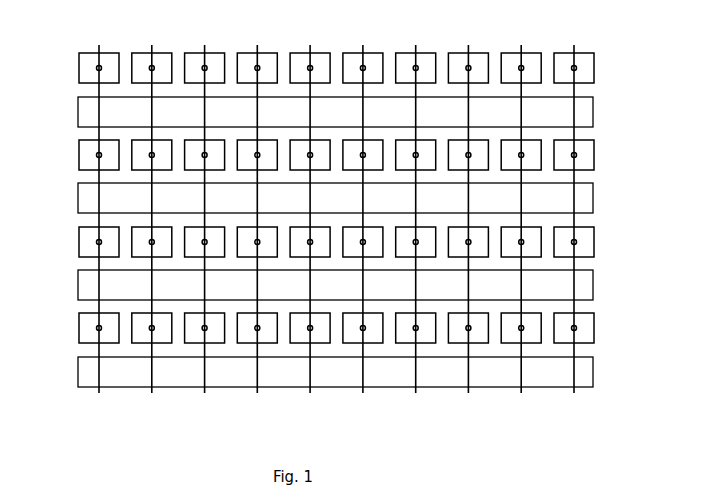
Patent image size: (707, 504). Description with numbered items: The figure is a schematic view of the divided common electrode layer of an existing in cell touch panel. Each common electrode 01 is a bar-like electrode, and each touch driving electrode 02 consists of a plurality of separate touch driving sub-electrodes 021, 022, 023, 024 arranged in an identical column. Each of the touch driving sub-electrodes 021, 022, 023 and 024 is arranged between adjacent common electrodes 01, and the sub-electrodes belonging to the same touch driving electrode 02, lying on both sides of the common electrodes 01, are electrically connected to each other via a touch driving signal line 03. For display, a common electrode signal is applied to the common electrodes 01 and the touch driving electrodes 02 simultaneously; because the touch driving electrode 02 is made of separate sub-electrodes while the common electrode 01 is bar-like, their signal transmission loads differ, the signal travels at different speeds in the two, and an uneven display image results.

The common electrode 01 is at (593, 111).
The touch driving electrode 02 is at (306, 209).
The touch driving sub-electrode 021 is at (79, 67).
The touch driving sub-electrode 022 is at (79, 157).
The touch driving sub-electrode 023 is at (79, 241).
The touch driving sub-electrode 024 is at (320, 339).
The touch driving signal line 03 is at (152, 52).